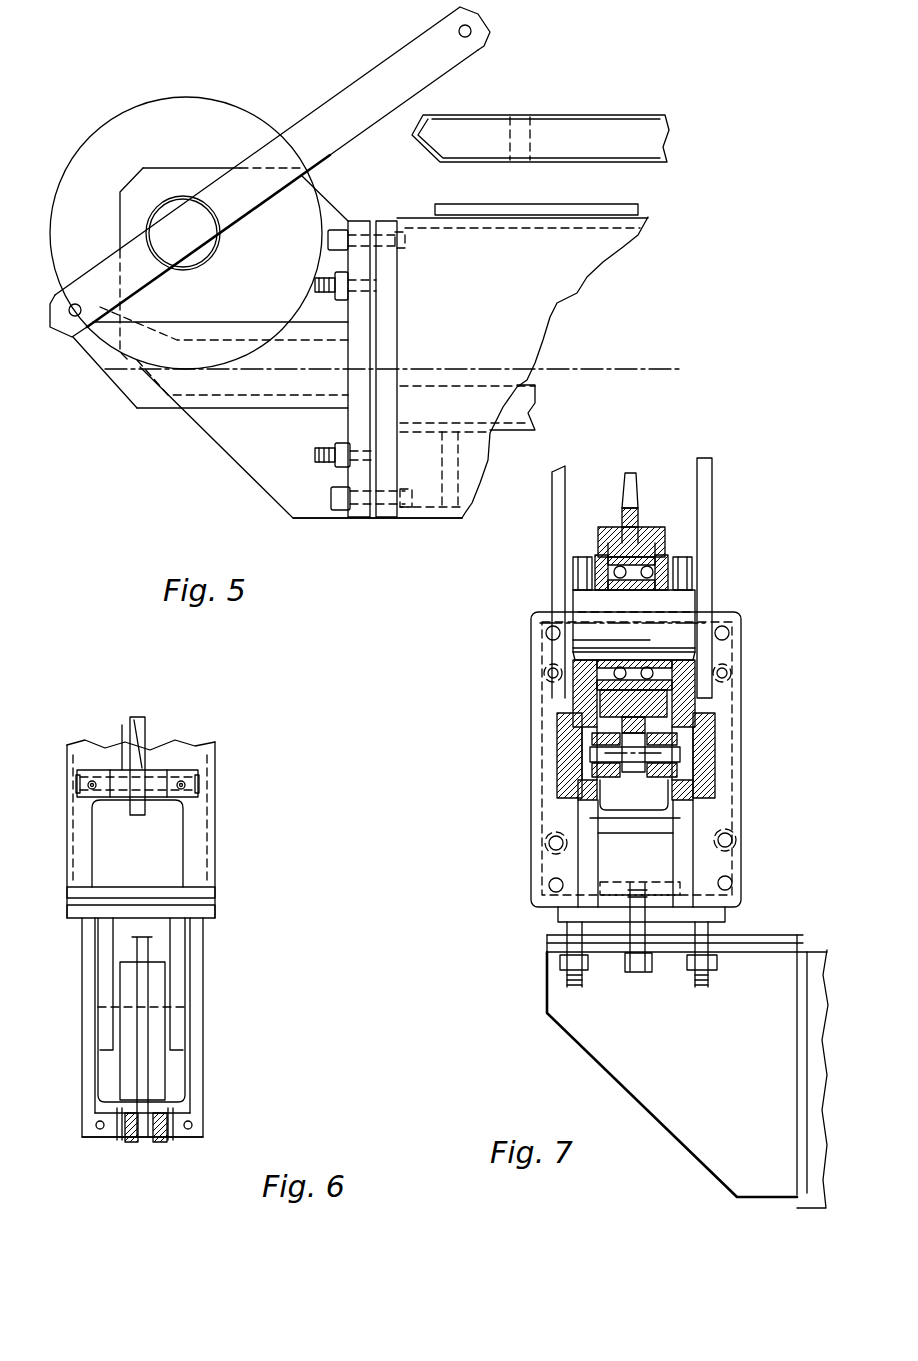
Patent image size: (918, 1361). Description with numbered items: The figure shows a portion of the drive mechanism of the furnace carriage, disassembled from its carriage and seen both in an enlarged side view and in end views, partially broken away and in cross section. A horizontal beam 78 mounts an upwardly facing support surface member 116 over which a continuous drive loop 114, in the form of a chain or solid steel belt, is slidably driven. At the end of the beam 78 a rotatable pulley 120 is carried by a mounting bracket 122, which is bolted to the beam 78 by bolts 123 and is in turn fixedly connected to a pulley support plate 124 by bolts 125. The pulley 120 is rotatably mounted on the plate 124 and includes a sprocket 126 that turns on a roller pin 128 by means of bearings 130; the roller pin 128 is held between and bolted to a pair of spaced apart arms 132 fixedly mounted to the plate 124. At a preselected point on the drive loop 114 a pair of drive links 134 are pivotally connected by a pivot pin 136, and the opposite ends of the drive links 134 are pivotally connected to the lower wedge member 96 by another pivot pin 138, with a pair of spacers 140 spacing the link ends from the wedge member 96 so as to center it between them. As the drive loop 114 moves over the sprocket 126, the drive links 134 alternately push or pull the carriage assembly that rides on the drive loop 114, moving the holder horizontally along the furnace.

In FIG. 5, the horizontal beam 78 is at (402, 521).
In FIG. 7, the horizontal beam 78 is at (810, 945).
In FIG. 6, the lower wedge member 96 is at (142, 716).
In FIG. 7, the drive loop 114 is at (677, 763).
In FIG. 6, the drive loop 114 is at (155, 1140).
In FIG. 5, the support surface member 116 is at (480, 164).
In FIG. 5, the pulley 120 is at (127, 110).
In FIG. 7, the pulley 120 is at (522, 611).
In FIG. 5, the mounting bracket 122 is at (240, 461).
In FIG. 7, the mounting bracket 122 is at (578, 1038).
In FIG. 5, the bolt 123 is at (328, 246).
In FIG. 5, the pulley support plate 124 is at (325, 201).
In FIG. 7, the pulley support plate 124 is at (530, 720).
In FIG. 6, the pulley support plate 124 is at (215, 824).
In FIG. 7, the bolt 125 is at (578, 963).
In FIG. 7, the sprocket 126 is at (643, 512).
In FIG. 5, the roller pin 128 is at (213, 247).
In FIG. 7, the roller pin 128 is at (695, 612).
In FIG. 7, the bearing 130 is at (665, 560).
In FIG. 7, the arm 132 is at (672, 793).
In FIG. 5, the drive link 134 is at (363, 75).
In FIG. 7, the drive link 134 is at (667, 520).
In FIG. 6, the drive link 134 is at (92, 1038).
In FIG. 6, the pivot pin 136 is at (205, 1125).
In FIG. 6, the pivot pin 138 is at (200, 776).
In FIG. 6, the spacer 140 is at (124, 742).